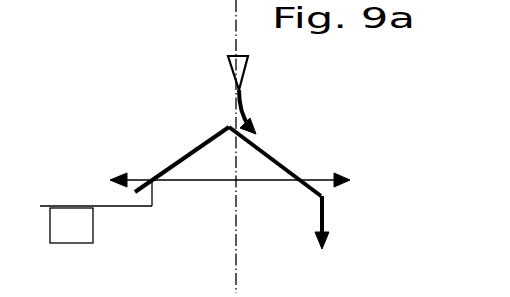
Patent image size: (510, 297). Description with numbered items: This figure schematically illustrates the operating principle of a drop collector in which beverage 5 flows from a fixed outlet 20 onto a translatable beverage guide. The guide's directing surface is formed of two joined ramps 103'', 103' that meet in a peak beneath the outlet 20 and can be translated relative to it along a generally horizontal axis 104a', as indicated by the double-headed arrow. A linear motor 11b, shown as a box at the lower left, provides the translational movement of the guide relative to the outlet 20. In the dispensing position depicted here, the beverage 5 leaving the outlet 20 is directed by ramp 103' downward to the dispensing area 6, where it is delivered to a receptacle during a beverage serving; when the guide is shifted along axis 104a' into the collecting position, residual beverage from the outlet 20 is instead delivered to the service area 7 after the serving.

The outlet 20 is at (230, 62).
The beverage 5 is at (245, 118).
The ramp 103'' is at (153, 143).
The ramp 103' is at (293, 146).
The generally horizontal axis 104a' is at (230, 212).
The service area 7 is at (96, 216).
The linear motor 11b is at (65, 242).
The dispensing area 6 is at (337, 262).